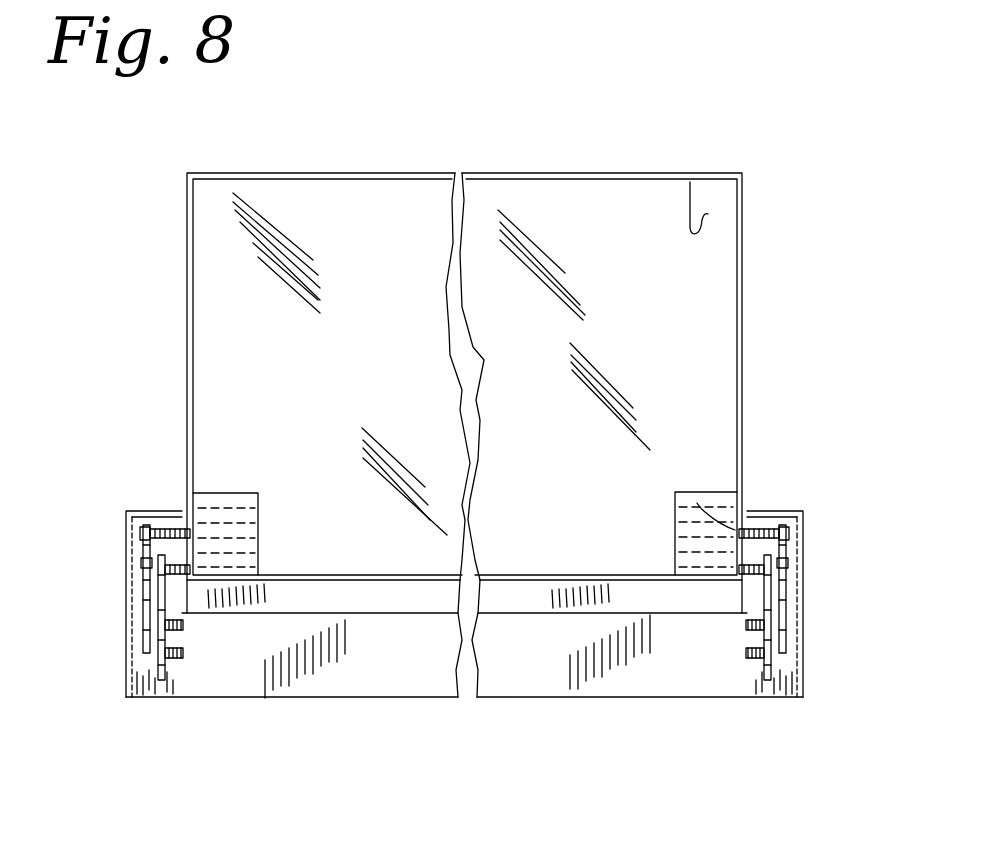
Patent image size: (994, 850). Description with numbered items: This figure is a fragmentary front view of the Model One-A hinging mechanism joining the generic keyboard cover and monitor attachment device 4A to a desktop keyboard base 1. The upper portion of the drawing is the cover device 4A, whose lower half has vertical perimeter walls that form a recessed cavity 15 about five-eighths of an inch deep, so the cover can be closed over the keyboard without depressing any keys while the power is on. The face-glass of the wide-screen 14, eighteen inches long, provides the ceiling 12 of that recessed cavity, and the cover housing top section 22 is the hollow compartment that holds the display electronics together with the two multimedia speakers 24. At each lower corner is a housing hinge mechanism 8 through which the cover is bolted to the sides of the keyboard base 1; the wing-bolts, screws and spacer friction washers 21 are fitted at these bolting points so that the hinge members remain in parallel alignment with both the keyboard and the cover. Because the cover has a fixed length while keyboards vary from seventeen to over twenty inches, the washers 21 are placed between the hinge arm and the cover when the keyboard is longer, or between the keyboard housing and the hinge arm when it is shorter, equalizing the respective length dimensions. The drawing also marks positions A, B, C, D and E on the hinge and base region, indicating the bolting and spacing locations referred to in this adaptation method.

The cover device 4A is at (592, 173).
The ceiling of the recessed cavity 12 is at (293, 422).
The face-glass of the wide-screen 14 is at (649, 300).
The recessed cavity 15 is at (708, 214).
The multimedia speakers 24 is at (205, 496).
The cover housing top section 22 is at (740, 523).
The housing hinge mechanism 8 is at (148, 511).
The spacer friction washers 21 is at (172, 647).
The base / sill 1 is at (389, 674).
The point A is at (688, 490).
The point B is at (787, 617).
The point C is at (710, 558).
The point D is at (773, 645).
The strip / line E is at (280, 600).